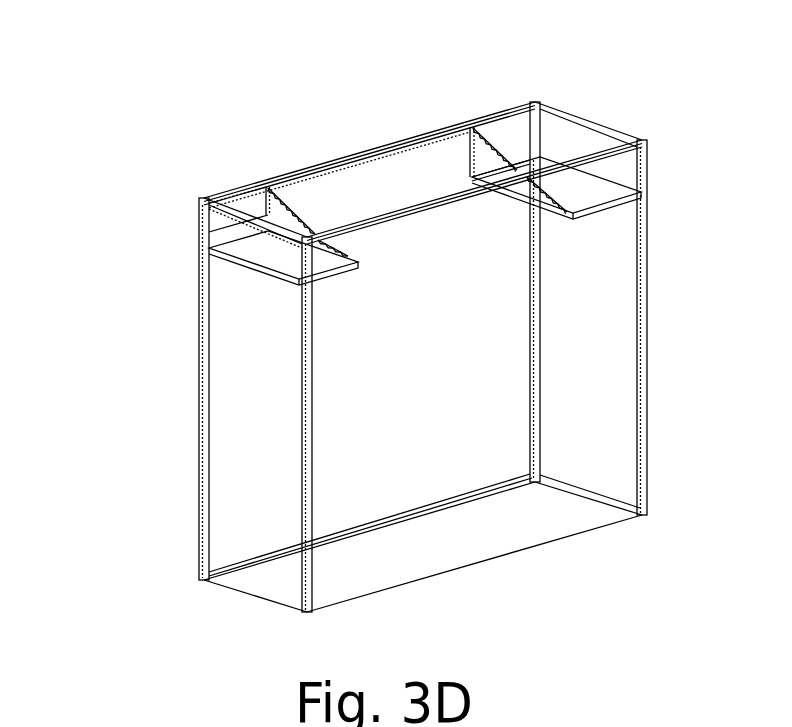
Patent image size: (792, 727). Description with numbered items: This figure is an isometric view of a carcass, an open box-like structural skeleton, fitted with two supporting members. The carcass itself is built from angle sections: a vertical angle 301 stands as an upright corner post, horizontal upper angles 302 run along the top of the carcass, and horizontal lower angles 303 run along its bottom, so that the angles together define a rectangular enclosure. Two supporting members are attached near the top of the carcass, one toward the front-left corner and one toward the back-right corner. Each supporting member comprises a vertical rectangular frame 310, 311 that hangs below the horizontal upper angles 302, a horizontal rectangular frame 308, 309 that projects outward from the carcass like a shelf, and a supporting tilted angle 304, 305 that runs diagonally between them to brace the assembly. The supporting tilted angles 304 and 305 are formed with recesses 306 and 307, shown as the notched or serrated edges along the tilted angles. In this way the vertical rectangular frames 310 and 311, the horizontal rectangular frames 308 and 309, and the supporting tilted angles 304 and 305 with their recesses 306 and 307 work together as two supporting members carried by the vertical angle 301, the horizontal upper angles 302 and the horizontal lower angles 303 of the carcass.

The vertical angle 301 is at (647, 303).
The horizontal upper angle 302 is at (372, 151).
The horizontal lower angle 303 is at (483, 568).
The supporting tilted angle 304 is at (505, 168).
The supporting tilted angle 305 is at (311, 226).
The recess 306 is at (478, 132).
The recess 307 is at (294, 205).
The horizontal rectangular frame 308 is at (643, 191).
The horizontal rectangular frame 309 is at (262, 265).
The vertical rectangular frame 310 is at (497, 150).
The vertical rectangular frame 311 is at (209, 217).